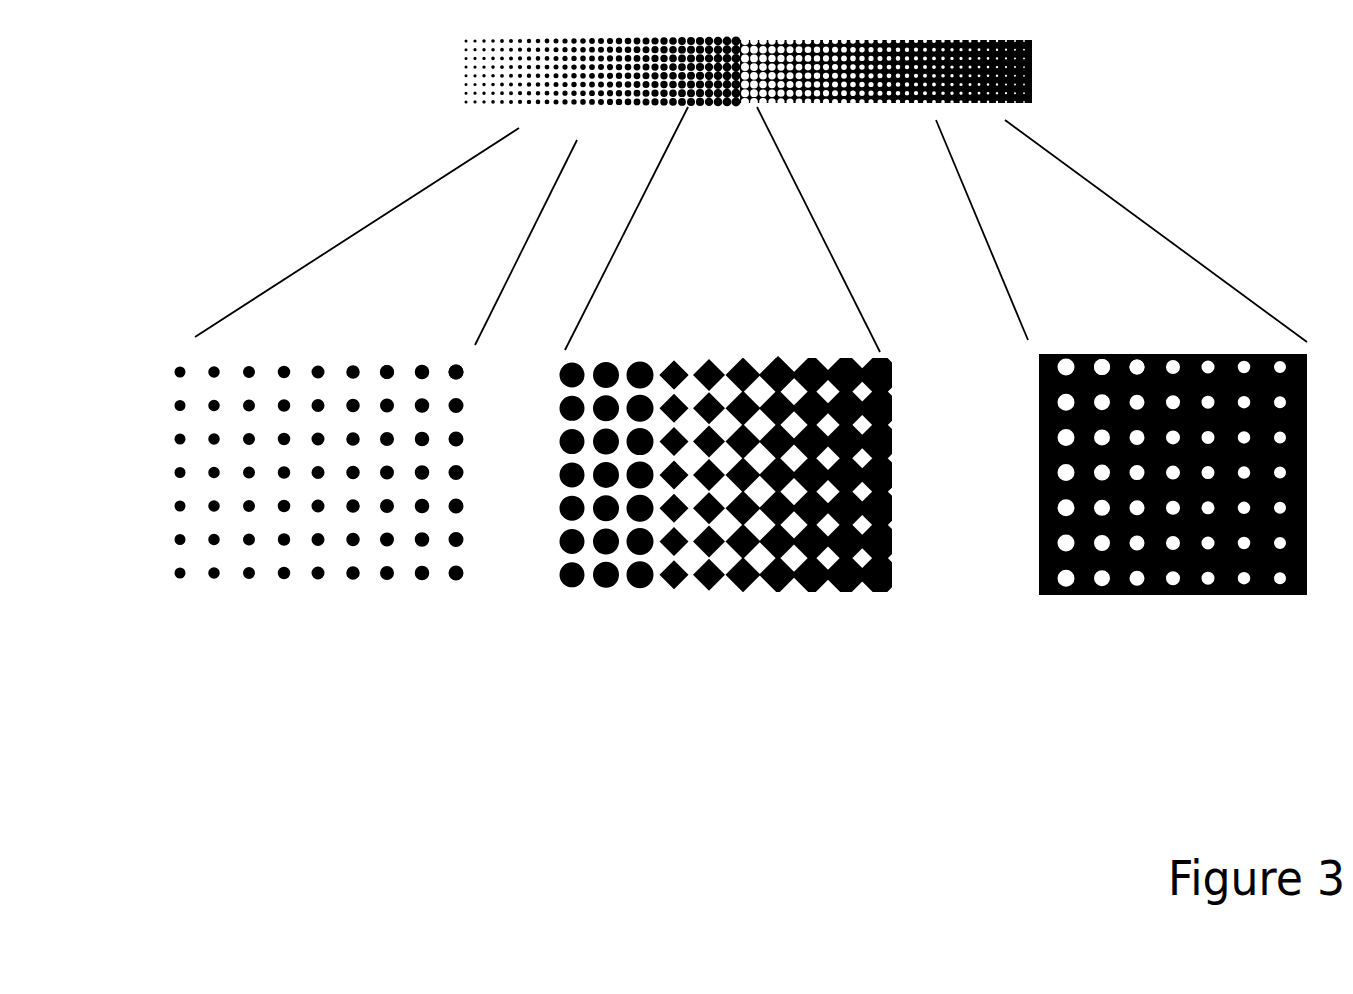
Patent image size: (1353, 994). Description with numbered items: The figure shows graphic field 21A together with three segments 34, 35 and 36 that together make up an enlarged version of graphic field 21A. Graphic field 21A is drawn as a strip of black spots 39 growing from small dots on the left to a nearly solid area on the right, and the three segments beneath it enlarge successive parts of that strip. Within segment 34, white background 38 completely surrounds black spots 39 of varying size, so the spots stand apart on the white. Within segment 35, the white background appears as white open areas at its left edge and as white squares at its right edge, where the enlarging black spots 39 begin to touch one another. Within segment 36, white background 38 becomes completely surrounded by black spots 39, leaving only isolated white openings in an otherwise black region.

The graphic field 21A is at (473, 62).
The segment 34 is at (285, 578).
The segment 35 is at (676, 585).
The segment 36 is at (1233, 595).
The white background 38 is at (405, 398).
The black spots 39 is at (458, 370).